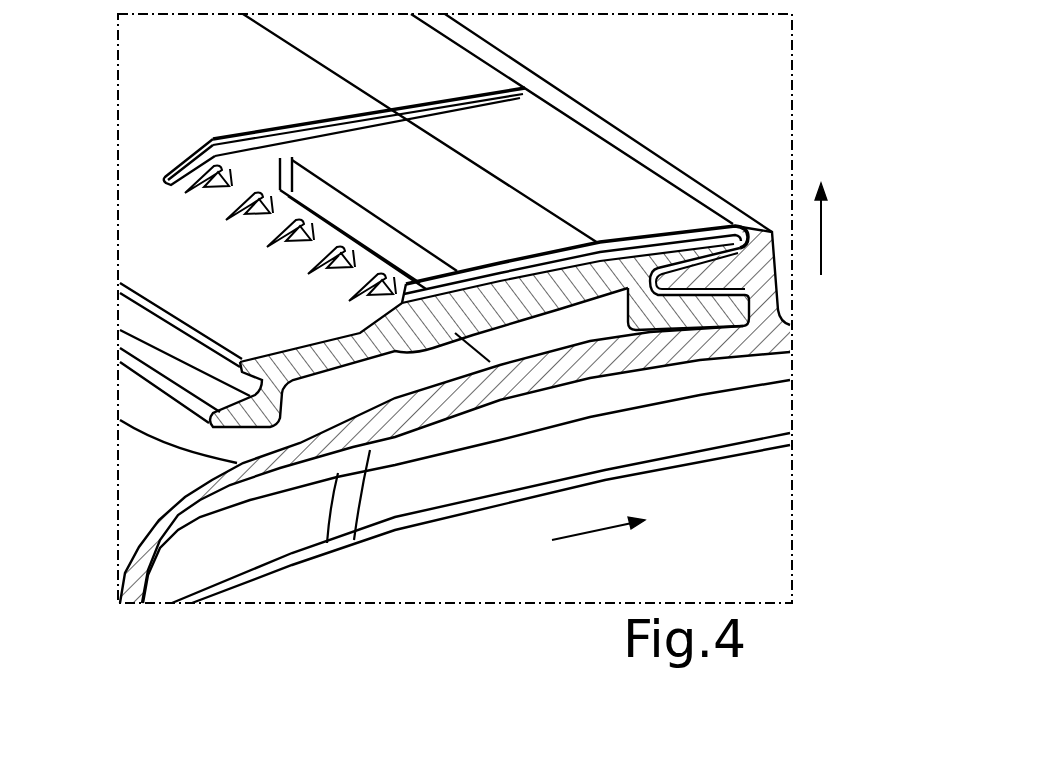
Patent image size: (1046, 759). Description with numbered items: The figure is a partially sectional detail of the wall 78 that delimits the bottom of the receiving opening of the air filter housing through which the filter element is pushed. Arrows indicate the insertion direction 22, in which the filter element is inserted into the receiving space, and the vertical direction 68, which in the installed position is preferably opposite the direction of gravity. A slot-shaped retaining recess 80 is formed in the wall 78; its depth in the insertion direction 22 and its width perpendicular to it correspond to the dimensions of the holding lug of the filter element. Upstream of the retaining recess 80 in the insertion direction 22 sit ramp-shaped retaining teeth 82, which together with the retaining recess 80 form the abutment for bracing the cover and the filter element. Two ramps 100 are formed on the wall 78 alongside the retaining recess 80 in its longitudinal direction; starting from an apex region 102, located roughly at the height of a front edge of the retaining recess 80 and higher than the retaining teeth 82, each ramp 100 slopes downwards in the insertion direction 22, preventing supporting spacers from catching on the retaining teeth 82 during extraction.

The wall 78 is at (143, 88).
The ramp 100 is at (260, 131).
The apex region 102 is at (207, 150).
The retaining recess 80 is at (342, 230).
The retaining teeth 82 is at (248, 218).
The vertical direction 68 is at (822, 228).
The insertion direction 22 is at (595, 530).